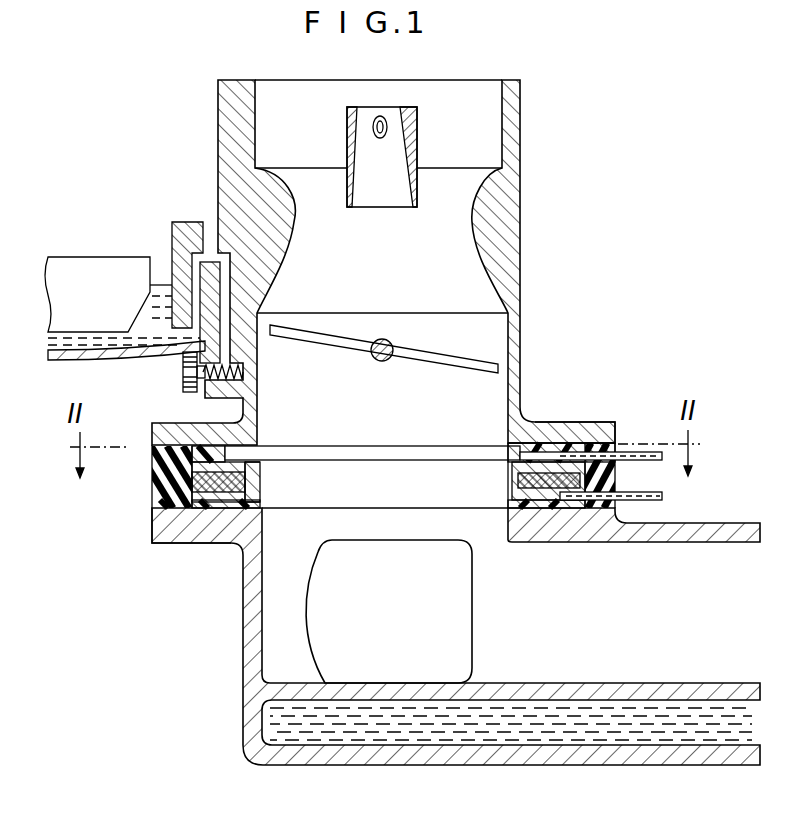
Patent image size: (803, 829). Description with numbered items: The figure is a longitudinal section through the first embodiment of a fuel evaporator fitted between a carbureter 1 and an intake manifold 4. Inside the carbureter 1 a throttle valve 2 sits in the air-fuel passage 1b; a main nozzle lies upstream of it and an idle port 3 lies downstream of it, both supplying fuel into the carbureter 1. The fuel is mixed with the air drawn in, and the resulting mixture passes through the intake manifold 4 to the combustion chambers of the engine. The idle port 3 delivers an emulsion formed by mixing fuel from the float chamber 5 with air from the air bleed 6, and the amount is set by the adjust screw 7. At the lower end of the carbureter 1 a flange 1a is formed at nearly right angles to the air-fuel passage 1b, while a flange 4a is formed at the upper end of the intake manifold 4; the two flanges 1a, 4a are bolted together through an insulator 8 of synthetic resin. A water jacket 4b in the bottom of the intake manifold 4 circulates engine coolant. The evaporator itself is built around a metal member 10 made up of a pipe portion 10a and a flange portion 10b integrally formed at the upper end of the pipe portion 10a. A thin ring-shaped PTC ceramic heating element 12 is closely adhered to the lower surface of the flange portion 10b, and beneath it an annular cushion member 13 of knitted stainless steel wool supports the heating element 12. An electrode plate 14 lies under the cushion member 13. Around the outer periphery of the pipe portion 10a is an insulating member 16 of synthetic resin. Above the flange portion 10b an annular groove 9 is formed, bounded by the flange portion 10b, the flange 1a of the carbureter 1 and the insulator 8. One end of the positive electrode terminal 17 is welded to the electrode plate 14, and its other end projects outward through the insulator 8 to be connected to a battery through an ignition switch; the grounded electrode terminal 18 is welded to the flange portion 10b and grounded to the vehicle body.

The carbureter 1 is at (521, 293).
The flange 1a is at (541, 430).
The air-fuel passage 1b is at (262, 313).
The throttle valve 2 is at (462, 364).
The idle port 3 is at (245, 372).
The intake manifold 4 is at (456, 656).
The flange 4a is at (188, 534).
The water jacket 4b is at (516, 740).
The float chamber 5 is at (140, 300).
The air bleed 6 is at (210, 224).
The adjust screw 7 is at (184, 389).
The insulator 8 is at (163, 500).
The annular groove 9 is at (518, 452).
The metal member 10 is at (266, 501).
The pipe portion 10a is at (262, 472).
The flange portion 10b is at (254, 456).
The heating element 12 is at (170, 478).
The cushion member 13 is at (506, 509).
The electrode plate 14 is at (530, 506).
The insulating member 16 is at (246, 484).
The positive electrode terminal 17 is at (643, 497).
The grounded electrode terminal 18 is at (622, 446).